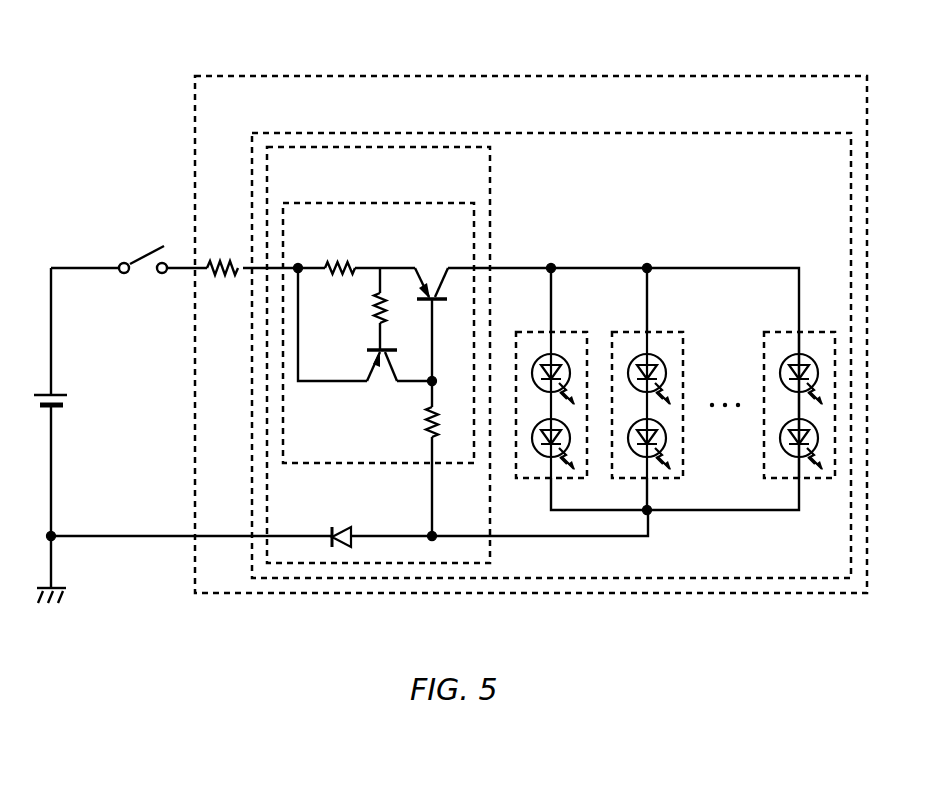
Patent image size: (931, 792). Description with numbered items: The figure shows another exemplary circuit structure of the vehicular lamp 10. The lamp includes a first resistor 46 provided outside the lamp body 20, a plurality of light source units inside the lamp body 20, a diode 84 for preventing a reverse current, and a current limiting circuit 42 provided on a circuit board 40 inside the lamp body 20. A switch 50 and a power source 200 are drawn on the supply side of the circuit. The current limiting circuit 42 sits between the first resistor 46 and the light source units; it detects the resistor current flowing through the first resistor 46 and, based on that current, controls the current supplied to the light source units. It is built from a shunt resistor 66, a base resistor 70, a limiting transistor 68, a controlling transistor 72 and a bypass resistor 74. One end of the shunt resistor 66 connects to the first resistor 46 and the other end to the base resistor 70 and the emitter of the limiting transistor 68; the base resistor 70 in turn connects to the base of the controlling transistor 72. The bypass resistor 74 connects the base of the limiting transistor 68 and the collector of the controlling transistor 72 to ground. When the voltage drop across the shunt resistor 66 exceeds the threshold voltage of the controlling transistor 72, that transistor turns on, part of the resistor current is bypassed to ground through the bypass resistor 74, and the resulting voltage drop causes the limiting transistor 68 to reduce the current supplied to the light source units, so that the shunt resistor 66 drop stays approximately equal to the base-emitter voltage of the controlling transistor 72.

The vehicular lamp 10 is at (530, 76).
The lamp body 20 is at (550, 133).
The circuit board 40 is at (490, 211).
The current limiting circuit 42 is at (378, 203).
The first resistor 46 is at (228, 257).
The switch 50 is at (146, 254).
The shunt resistor 66 is at (344, 261).
The limiting transistor 68 is at (430, 280).
The base resistor 70 is at (375, 307).
The controlling transistor 72 is at (378, 368).
The bypass resistor 74 is at (442, 412).
The diode 84 is at (335, 526).
The battery 200 is at (62, 393).